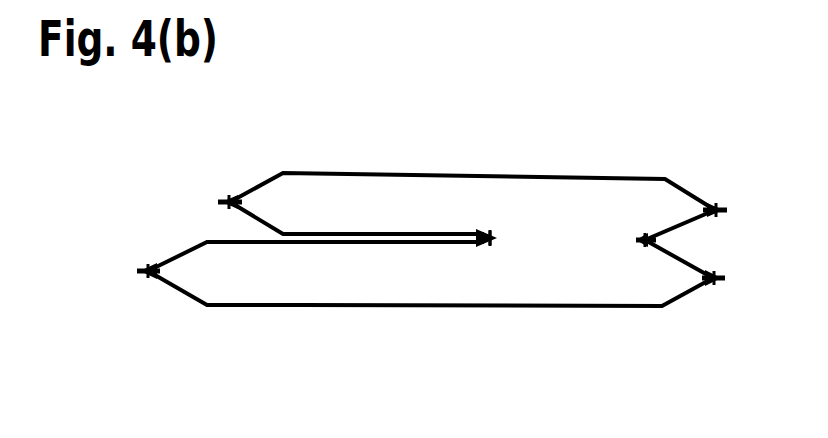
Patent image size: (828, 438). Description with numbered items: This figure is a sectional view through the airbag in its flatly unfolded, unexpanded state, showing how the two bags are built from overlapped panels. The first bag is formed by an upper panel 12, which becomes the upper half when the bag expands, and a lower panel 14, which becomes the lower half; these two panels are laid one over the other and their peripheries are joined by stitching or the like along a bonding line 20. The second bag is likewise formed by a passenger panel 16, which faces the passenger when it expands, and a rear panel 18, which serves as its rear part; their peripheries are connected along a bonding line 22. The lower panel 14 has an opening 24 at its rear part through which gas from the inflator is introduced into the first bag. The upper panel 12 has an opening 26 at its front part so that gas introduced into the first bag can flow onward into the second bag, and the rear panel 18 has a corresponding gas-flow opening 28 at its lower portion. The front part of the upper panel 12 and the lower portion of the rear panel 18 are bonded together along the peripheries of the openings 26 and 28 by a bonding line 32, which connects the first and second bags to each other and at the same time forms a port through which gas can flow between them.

The upper panel 12 is at (370, 246).
The lower panel 14 is at (475, 308).
The passenger panel 16 is at (357, 174).
The rear panel 18 is at (307, 233).
The bonding line 20 is at (148, 267).
The bonding line 22 is at (229, 199).
The opening 24 is at (283, 308).
The opening 26 is at (497, 243).
The gas-flow opening 28 is at (642, 239).
The bonding line 32 is at (490, 232).